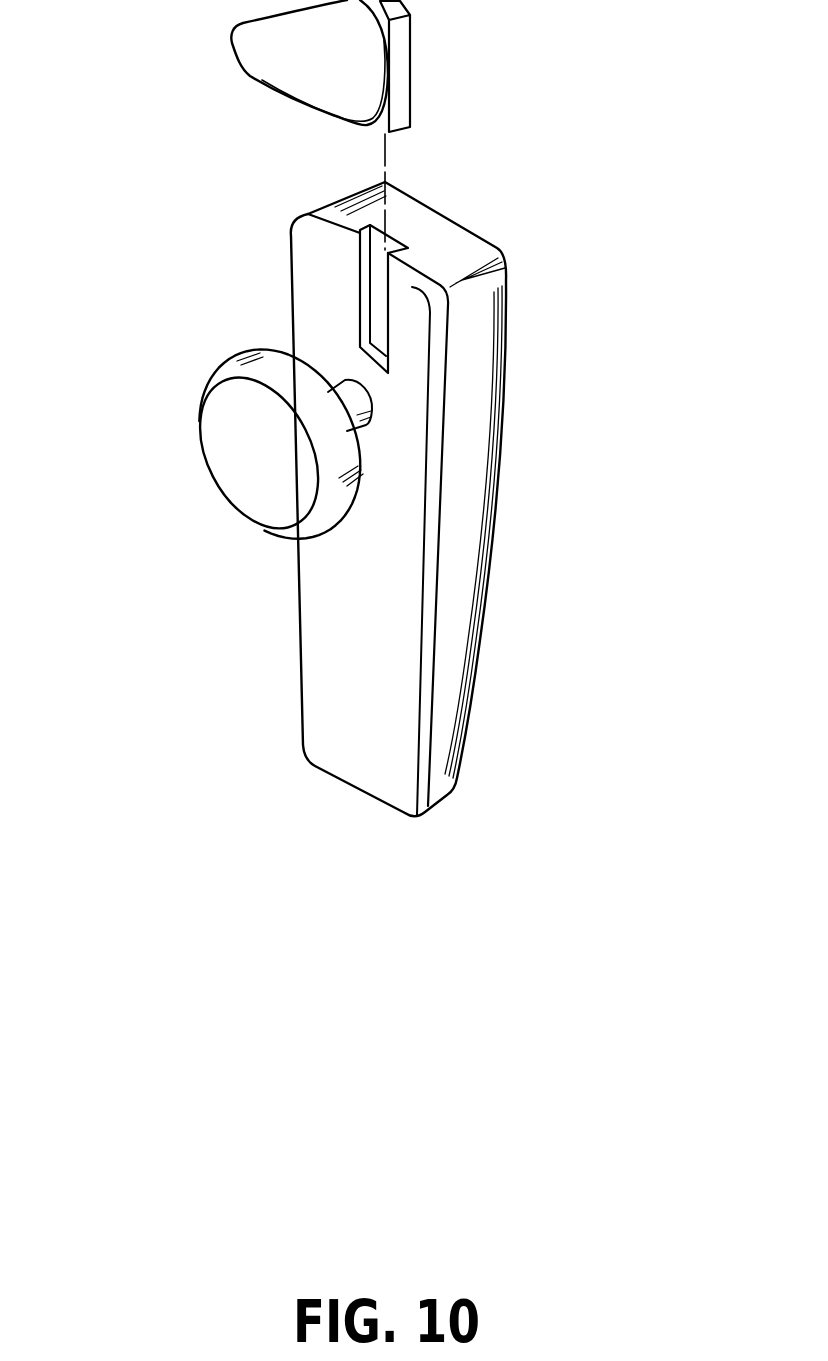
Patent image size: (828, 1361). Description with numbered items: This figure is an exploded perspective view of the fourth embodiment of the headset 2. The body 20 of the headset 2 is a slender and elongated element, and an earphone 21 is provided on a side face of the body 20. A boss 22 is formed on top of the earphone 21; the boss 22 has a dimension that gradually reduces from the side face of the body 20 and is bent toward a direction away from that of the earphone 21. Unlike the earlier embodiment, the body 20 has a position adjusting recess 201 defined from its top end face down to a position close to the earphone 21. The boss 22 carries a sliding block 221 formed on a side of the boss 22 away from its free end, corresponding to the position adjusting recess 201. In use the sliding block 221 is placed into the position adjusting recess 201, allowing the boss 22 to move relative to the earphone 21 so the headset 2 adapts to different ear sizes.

The headset 2 is at (552, 221).
The body 20 is at (458, 532).
The position adjusting recess 201 is at (380, 323).
The earphone 21 is at (252, 412).
The boss 22 is at (258, 56).
The sliding block 221 is at (398, 62).